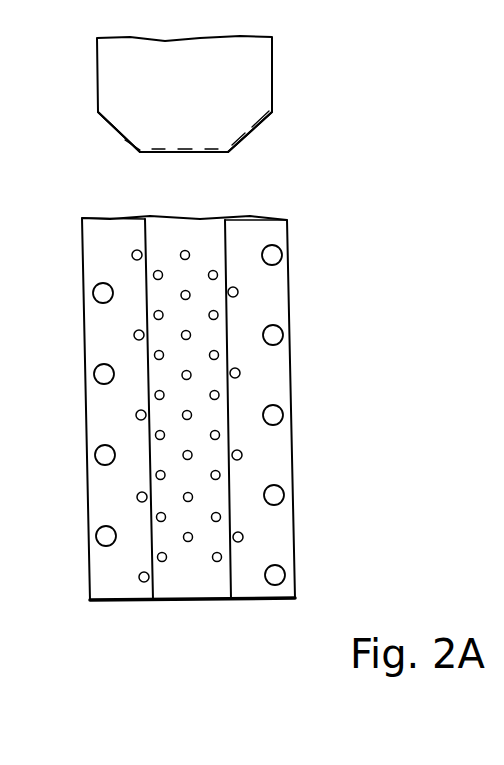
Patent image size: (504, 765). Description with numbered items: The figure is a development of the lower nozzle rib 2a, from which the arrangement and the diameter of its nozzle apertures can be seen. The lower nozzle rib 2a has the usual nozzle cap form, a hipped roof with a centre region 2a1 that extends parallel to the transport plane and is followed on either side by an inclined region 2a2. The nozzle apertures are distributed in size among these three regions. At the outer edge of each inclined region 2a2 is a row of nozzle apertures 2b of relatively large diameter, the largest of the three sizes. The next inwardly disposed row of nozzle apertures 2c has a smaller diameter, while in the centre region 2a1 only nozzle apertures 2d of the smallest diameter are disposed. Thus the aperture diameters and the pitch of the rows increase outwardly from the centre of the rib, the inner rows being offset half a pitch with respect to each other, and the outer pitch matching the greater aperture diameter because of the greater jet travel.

The lower nozzle rib 2a is at (274, 55).
The centre region 2a1 is at (200, 152).
The inclined region 2a2 is at (245, 134).
The nozzle apertures of relatively large diameter 2b is at (100, 453).
The nozzle apertures of smaller diameter 2c is at (140, 578).
The nozzle apertures of the smallest diameter 2d is at (188, 542).